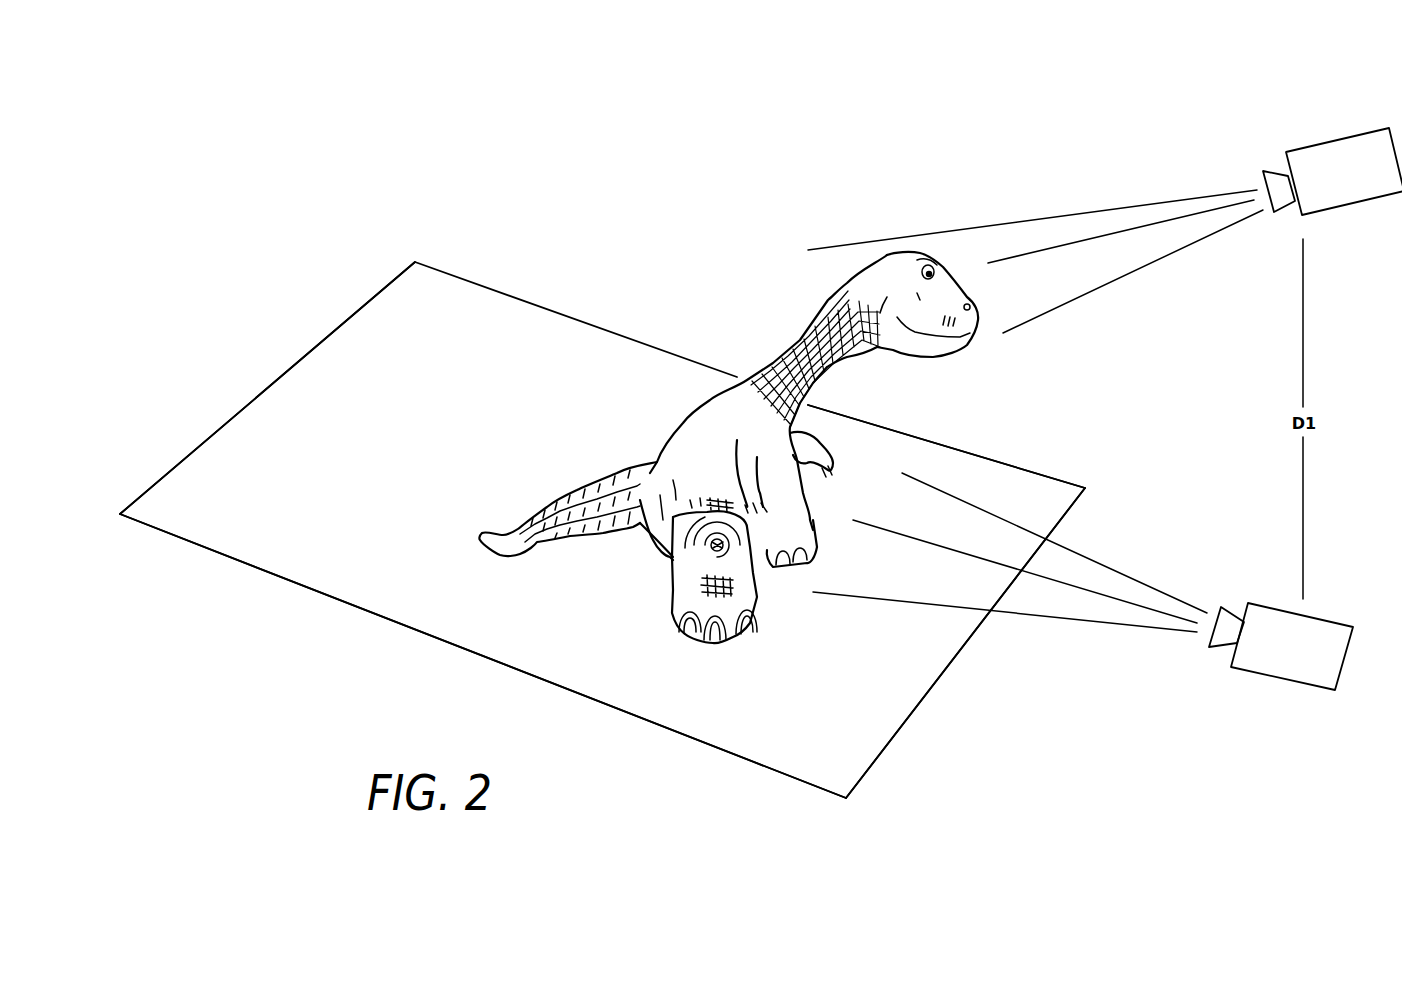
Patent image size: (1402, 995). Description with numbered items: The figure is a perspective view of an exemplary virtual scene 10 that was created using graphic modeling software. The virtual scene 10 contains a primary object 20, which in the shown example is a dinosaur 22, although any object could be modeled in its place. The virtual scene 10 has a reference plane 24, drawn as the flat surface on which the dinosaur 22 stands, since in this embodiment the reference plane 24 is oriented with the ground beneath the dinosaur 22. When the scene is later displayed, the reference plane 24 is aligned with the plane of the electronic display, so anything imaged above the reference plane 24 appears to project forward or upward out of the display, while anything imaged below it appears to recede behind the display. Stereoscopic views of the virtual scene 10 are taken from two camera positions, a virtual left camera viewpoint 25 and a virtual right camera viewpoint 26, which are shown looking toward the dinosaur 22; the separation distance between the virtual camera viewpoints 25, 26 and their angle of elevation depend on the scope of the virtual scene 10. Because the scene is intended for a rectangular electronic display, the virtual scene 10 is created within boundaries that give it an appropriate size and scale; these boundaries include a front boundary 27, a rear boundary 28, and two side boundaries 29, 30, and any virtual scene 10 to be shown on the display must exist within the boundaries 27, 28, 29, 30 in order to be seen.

The virtual scene 10 is at (685, 142).
The primary object 20 is at (747, 373).
The dinosaur 22 is at (807, 355).
The reference plane 24 is at (900, 670).
The virtual left camera viewpoint 25 is at (1298, 683).
The virtual right camera viewpoint 26 is at (1313, 143).
The front boundary 27 is at (968, 645).
The rear boundary 28 is at (293, 362).
The side boundary 29 is at (658, 727).
The side boundary 30 is at (977, 452).